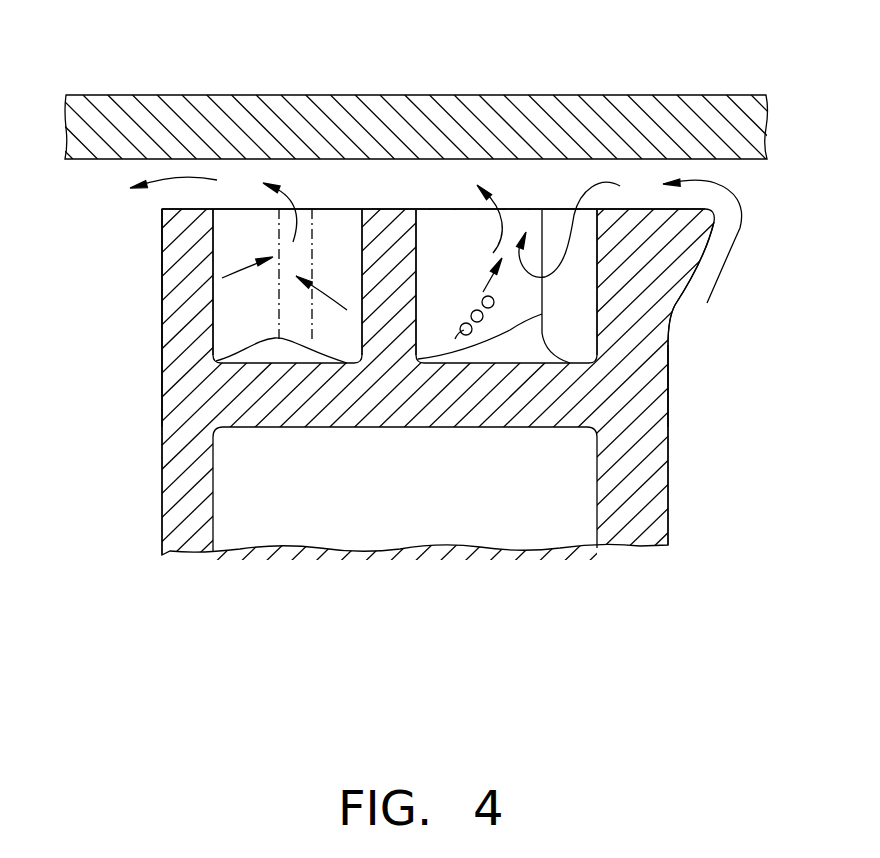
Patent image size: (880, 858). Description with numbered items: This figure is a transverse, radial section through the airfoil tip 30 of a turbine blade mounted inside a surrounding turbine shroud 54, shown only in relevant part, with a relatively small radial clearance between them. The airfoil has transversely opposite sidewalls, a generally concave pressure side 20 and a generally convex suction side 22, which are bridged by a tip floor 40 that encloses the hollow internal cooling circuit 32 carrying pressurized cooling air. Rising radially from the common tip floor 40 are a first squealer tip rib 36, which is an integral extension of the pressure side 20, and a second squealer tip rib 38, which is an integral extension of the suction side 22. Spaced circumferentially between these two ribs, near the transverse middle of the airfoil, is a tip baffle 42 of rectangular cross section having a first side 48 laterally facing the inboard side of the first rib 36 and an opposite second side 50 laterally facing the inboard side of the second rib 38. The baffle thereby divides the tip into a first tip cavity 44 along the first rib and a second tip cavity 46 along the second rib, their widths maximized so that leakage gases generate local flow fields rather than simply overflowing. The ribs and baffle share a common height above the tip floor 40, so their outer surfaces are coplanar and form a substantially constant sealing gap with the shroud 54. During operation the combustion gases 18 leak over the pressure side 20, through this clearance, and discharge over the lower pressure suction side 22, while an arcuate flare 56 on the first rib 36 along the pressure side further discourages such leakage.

The combustion gases 18 is at (684, 400).
The pressure side 20 is at (673, 498).
The suction side 22 is at (162, 508).
The tip 30 is at (150, 236).
The internal cooling circuit 32 is at (383, 494).
The first squealer tip rib 36 is at (624, 282).
The second squealer tip rib 38 is at (162, 313).
The tip floor 40 is at (373, 409).
The tip baffle 42 is at (388, 209).
The first tip cavity 44 is at (503, 312).
The second tip cavity 46 is at (229, 317).
The first side 48 is at (419, 308).
The second side 50 is at (353, 338).
The turbine shroud 54 is at (741, 95).
The arcuate flare 56 is at (678, 300).